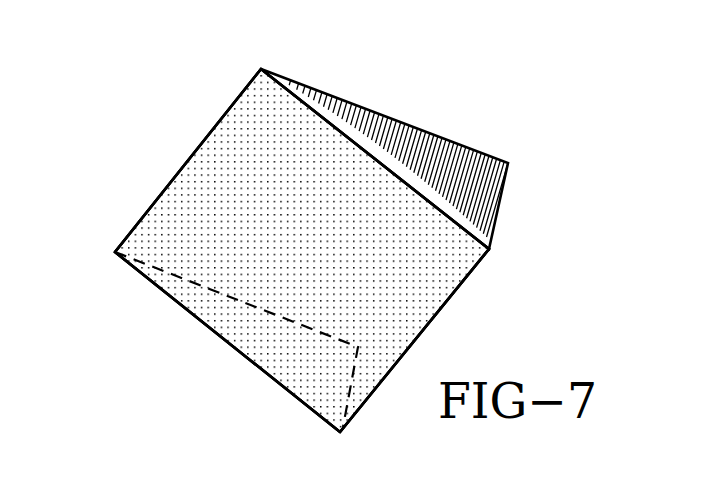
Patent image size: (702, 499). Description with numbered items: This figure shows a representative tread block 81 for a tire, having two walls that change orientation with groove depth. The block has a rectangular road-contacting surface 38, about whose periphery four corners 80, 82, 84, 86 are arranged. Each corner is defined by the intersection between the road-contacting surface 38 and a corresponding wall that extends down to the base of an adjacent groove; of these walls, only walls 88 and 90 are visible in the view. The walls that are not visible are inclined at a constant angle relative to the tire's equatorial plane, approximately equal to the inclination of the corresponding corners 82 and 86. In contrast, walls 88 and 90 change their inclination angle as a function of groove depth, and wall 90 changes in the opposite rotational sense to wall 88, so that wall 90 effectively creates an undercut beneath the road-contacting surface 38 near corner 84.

The road-contacting surface 38 is at (271, 143).
The tread block 81 is at (139, 108).
The corner 86 is at (170, 180).
The corner 84 is at (192, 317).
The corner 82 is at (442, 310).
The corner 80 is at (453, 220).
The wall 88 is at (387, 157).
The wall 90 is at (293, 348).